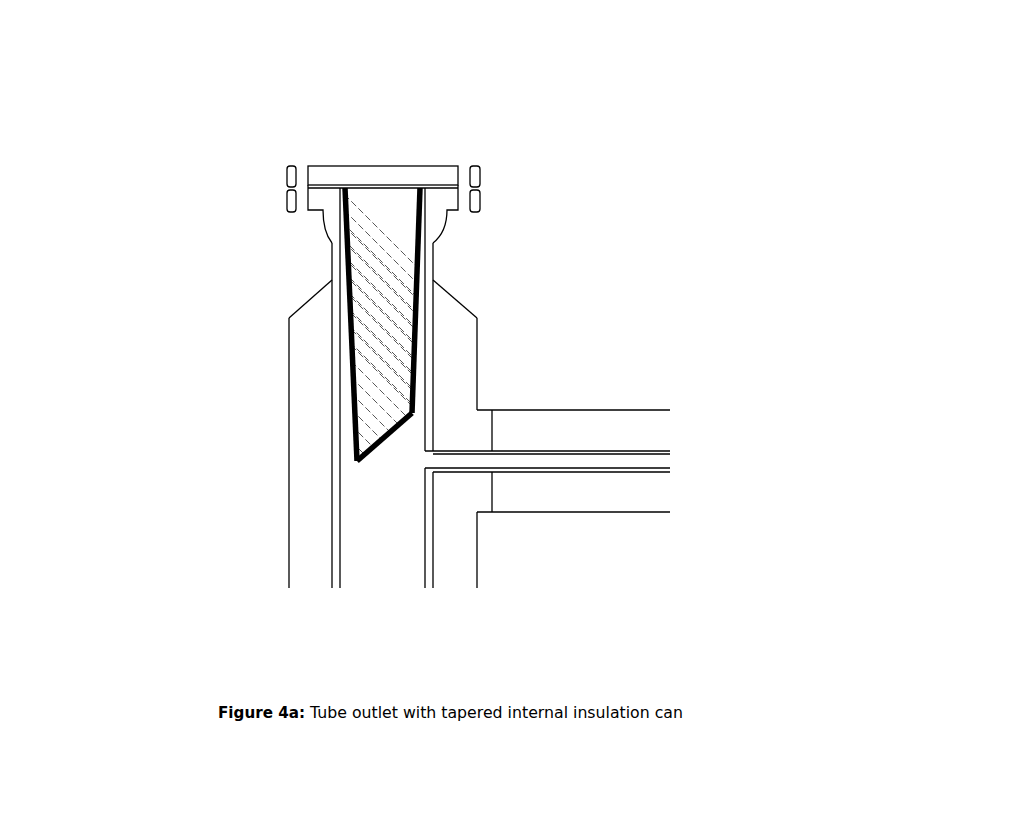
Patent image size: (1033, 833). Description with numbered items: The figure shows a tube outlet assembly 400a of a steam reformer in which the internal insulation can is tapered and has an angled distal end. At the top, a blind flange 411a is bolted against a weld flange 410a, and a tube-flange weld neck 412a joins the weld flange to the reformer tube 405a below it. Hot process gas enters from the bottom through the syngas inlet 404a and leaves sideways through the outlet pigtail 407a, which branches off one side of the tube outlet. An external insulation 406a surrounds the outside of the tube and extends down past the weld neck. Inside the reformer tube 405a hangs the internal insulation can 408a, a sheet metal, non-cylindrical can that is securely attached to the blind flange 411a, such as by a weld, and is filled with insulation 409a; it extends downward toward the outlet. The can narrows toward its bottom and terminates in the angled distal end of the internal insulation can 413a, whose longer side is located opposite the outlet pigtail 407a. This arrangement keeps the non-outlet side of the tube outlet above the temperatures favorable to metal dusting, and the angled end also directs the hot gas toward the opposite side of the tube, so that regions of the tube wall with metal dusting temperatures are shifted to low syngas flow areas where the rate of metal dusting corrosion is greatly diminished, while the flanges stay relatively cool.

The tube outlet assembly 400a is at (480, 77).
The blind flange 411a is at (446, 170).
The weld flange 410a is at (444, 232).
The tube-flange weld neck 412a is at (322, 250).
The insulation 409a is at (370, 313).
The internal insulation can 408a is at (427, 308).
The angled distal end of internal insulation can 413a is at (387, 437).
The outlet pigtail 407a is at (614, 466).
The external insulation 406a is at (464, 547).
The reformer tube 405a is at (436, 581).
The syngas inlet 404a is at (380, 590).